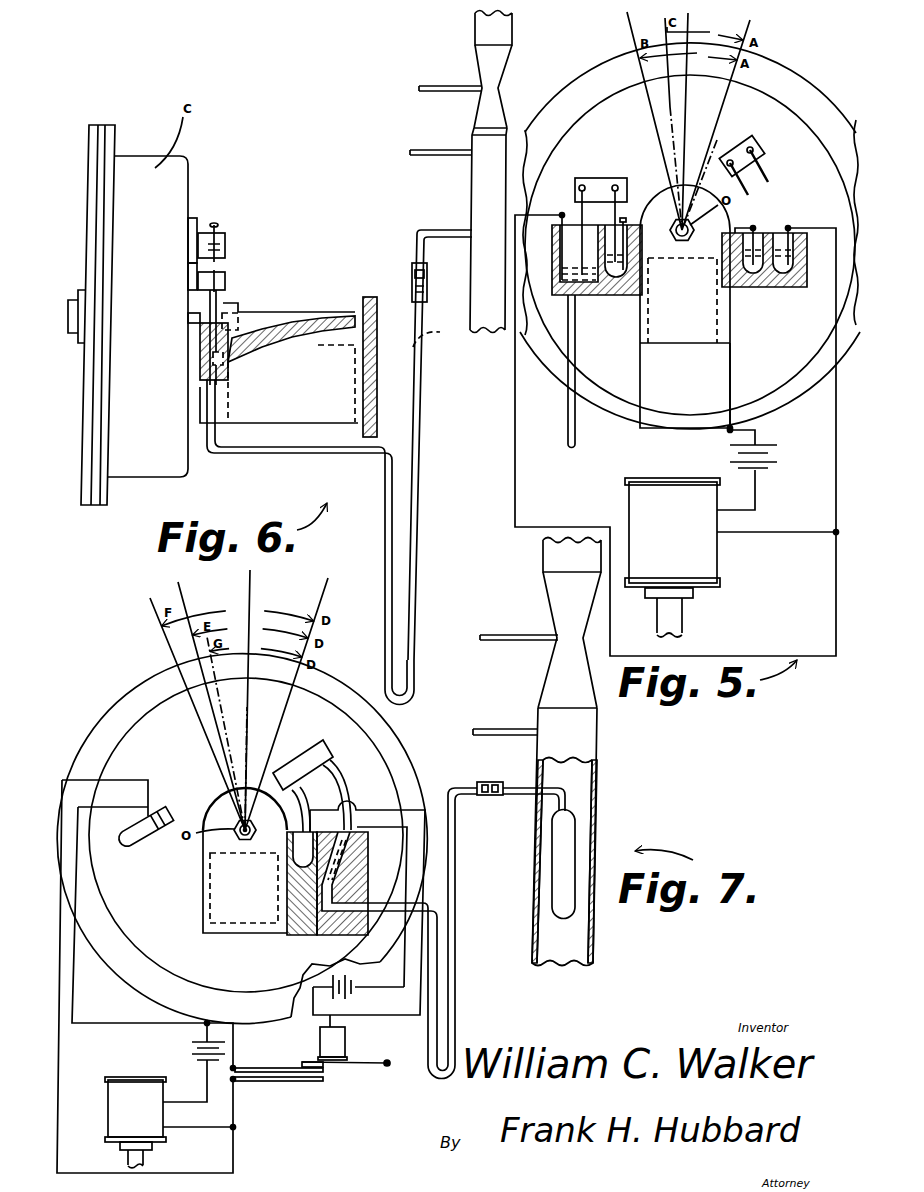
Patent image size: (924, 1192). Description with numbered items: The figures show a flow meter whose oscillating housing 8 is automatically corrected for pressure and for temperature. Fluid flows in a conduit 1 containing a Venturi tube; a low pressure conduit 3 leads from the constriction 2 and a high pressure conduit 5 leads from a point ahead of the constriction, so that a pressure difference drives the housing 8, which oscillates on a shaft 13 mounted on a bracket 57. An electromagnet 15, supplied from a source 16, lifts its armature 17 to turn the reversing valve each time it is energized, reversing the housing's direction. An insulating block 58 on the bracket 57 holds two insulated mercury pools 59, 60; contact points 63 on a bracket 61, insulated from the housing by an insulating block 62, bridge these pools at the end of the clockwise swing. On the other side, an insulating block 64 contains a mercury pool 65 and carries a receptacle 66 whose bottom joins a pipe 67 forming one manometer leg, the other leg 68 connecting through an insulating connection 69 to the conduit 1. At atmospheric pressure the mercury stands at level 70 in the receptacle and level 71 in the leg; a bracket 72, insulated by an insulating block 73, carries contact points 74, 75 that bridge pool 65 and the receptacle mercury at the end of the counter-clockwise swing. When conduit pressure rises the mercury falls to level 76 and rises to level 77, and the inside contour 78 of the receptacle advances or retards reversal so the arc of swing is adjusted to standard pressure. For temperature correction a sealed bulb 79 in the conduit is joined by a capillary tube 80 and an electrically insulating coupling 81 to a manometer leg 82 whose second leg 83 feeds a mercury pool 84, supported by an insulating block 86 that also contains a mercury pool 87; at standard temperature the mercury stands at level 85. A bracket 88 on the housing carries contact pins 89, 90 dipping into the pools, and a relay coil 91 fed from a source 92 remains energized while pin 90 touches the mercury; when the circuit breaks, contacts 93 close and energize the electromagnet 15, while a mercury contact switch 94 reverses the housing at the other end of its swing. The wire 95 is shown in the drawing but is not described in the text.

In FIG. 6, the conduit 1 is at (480, 294).
In FIG. 7, the conduit 1 is at (577, 778).
In FIG. 6, the constriction 2 is at (500, 90).
In FIG. 7, the constriction 2 is at (583, 640).
In FIG. 6, the low pressure conduit 3 is at (470, 86).
In FIG. 7, the low pressure conduit 3 is at (512, 635).
In FIG. 6, the high pressure conduit 5 is at (462, 150).
In FIG. 7, the high pressure conduit 5 is at (505, 729).
In FIG. 5, the housing 8 is at (810, 160).
In FIG. 7, the housing 8 is at (160, 716).
In FIG. 6, the shaft 13 is at (194, 323).
In FIG. 5, the electromagnet 15 is at (672, 532).
In FIG. 7, the electromagnet 15 is at (135, 1109).
In FIG. 5, the source 16 is at (778, 458).
In FIG. 7, the source 16 is at (192, 1045).
In FIG. 5, the armature 17 is at (695, 596).
In FIG. 7, the armature 17 is at (145, 1157).
In FIG. 6, the bracket 57 is at (288, 367).
In FIG. 5, the bracket 57 is at (686, 330).
In FIG. 7, the bracket 57 is at (245, 881).
In FIG. 5, the block of insulating material 58 is at (762, 288).
In FIG. 5, the mercury pool 59 is at (758, 232).
In FIG. 5, the mercury pool 60 is at (782, 232).
In FIG. 6, the bracket 61 is at (205, 233).
In FIG. 5, the bracket 61 is at (752, 140).
In FIG. 6, the insulating block 62 is at (192, 222).
In FIG. 6, the contact points 63 is at (220, 246).
In FIG. 5, the contact points 63 is at (770, 176).
In FIG. 5, the insulating block 64 is at (612, 296).
In FIG. 5, the mercury pool 65 is at (642, 238).
In FIG. 6, the receptacle 66 is at (278, 313).
In FIG. 5, the receptacle 66 is at (568, 296).
In FIG. 6, the pipe 67 is at (385, 485).
In FIG. 5, the pipe 67 is at (568, 420).
In FIG. 6, the leg 68 is at (420, 478).
In FIG. 6, the insulating connection 69 is at (413, 285).
In FIG. 6, the level 70 is at (200, 372).
In FIG. 5, the level 70 is at (566, 262).
In FIG. 6, the level 71 is at (442, 346).
In FIG. 6, the bracket 72 is at (222, 276).
In FIG. 5, the bracket 72 is at (592, 178).
In FIG. 6, the insulating block 73 is at (186, 278).
In FIG. 5, the contact point 74 is at (623, 222).
In FIG. 6, the contact point 75 is at (216, 298).
In FIG. 5, the contact point 75 is at (578, 210).
In FIG. 6, the level 76 is at (418, 683).
In FIG. 6, the level 77 is at (238, 333).
In FIG. 5, the level 77 is at (612, 235).
In FIG. 6, the inside contour 78 is at (310, 318).
In FIG. 7, the sealed bulb 79 is at (575, 842).
In FIG. 7, the capillary tube 80 is at (515, 797).
In FIG. 7, the electrically insulating coupling 81 is at (490, 797).
In FIG. 7, the manometer leg 82 is at (455, 875).
In FIG. 7, the second leg 83 is at (437, 955).
In FIG. 7, the mercury pool 84 is at (320, 922).
In FIG. 7, the level 85 is at (362, 850).
In FIG. 7, the insulating block 86 is at (285, 920).
In FIG. 7, the mercury pool 87 is at (258, 828).
In FIG. 7, the bracket 88 is at (297, 762).
In FIG. 7, the contact pin 89 is at (310, 800).
In FIG. 7, the contact pin 90 is at (333, 770).
In FIG. 7, the relay coil 91 is at (346, 1040).
In FIG. 7, the source 92 is at (352, 990).
In FIG. 7, the contacts 93 is at (325, 1075).
In FIG. 7, the mercury contact switch 94 is at (160, 808).
In FIG. 7, the wire 95 is at (377, 817).